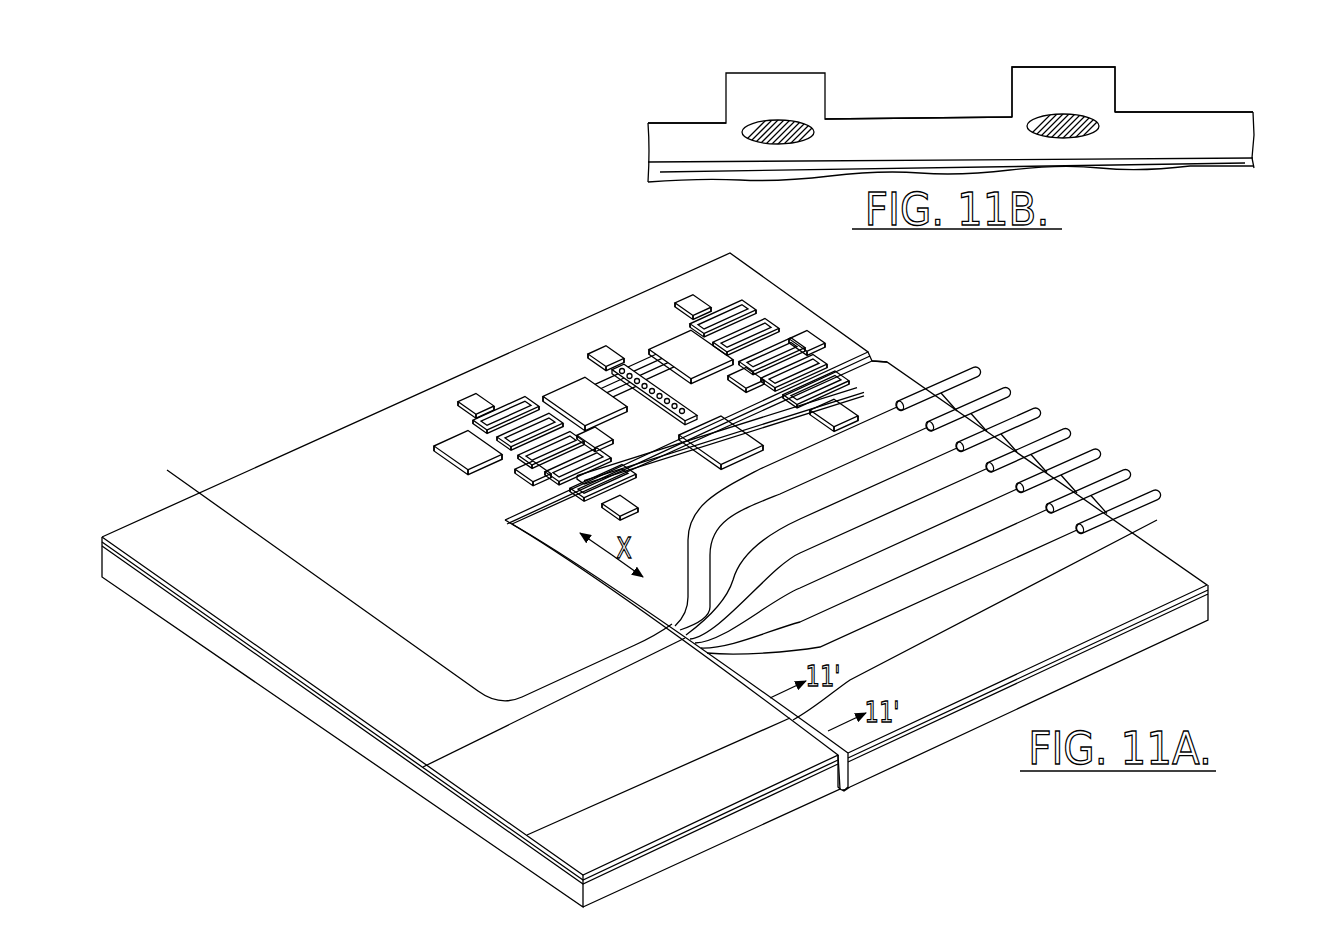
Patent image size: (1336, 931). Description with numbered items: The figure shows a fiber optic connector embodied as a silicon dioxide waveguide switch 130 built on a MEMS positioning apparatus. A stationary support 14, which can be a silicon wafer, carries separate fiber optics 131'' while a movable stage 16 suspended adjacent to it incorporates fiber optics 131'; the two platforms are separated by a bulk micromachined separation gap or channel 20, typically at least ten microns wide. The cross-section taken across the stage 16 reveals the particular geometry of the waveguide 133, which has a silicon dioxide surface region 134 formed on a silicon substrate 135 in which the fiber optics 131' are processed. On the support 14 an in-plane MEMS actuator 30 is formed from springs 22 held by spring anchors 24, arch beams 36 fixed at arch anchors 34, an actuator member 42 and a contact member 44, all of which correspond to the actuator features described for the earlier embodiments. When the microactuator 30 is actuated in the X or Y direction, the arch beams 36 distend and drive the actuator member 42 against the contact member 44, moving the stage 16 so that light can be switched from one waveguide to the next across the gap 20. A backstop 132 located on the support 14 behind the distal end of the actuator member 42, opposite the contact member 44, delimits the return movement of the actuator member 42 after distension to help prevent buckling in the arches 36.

In FIG. 11A, the support 14 is at (380, 506).
In FIG. 11B, the stage 16 is at (944, 152).
In FIG. 11A, the stage 16 is at (768, 675).
In FIG. 11A, the gap 20 is at (866, 795).
In FIG. 11A, the springs 22 is at (492, 402).
In FIG. 11A, the spring anchors 24 is at (468, 398).
In FIG. 11A, the MEMS actuator 30 is at (640, 358).
In FIG. 11A, the arch anchors 34 is at (597, 405).
In FIG. 11A, the arch beams 36 is at (592, 374).
In FIG. 11A, the actuator member 42 is at (683, 400).
In FIG. 11A, the contact member 44 is at (742, 445).
In FIG. 11A, the silicon dioxide waveguide switch 130 is at (900, 345).
In FIG. 11B, the fiber optics 131' is at (955, 132).
In FIG. 11A, the fiber optics 131' is at (1080, 449).
In FIG. 11A, the fiber optics 131'' is at (478, 652).
In FIG. 11A, the backstop 132 is at (598, 347).
In FIG. 11B, the waveguide 133 is at (1137, 60).
In FIG. 11B, the silicon dioxide surface region 134 is at (1258, 129).
In FIG. 11B, the silicon substrate 135 is at (1256, 163).